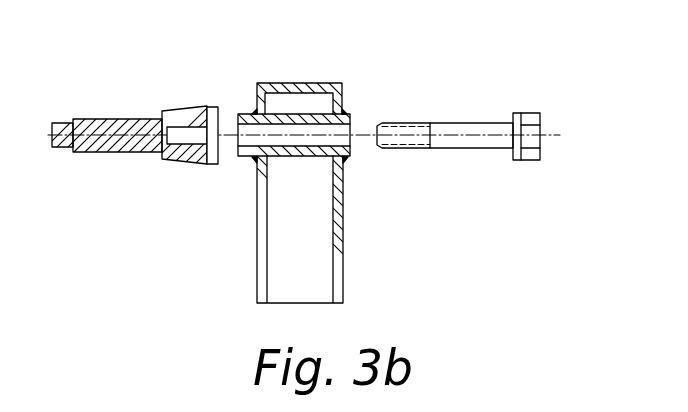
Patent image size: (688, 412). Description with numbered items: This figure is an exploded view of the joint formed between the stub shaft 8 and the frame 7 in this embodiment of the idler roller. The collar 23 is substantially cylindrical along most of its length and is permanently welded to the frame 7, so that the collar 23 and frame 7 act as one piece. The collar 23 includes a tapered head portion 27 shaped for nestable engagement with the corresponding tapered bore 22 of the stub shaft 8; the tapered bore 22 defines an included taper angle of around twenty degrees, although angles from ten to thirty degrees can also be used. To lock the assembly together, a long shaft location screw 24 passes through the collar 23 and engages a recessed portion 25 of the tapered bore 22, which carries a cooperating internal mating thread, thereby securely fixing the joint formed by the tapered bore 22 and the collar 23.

The frame 7 is at (345, 233).
The stub shaft 8 is at (137, 118).
The tapered bore 22 is at (222, 162).
The collar 23 is at (310, 112).
The shaft location screw 24 is at (537, 113).
The recessed portion 25 is at (200, 105).
The tapered head portion 27 is at (245, 113).